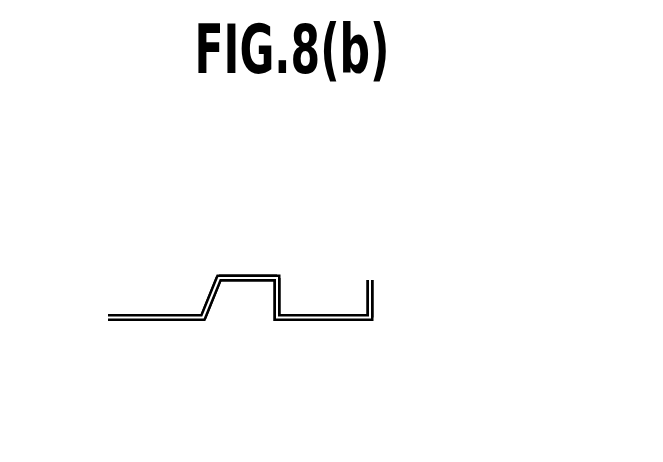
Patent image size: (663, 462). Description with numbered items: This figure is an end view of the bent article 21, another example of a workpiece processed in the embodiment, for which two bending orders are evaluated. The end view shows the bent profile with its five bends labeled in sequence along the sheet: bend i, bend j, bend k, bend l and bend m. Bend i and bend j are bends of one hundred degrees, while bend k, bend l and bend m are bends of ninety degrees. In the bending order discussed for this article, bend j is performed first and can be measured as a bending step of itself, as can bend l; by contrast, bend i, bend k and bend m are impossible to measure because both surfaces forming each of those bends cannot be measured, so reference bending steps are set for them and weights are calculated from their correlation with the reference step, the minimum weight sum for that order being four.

The bent article 21 is at (270, 281).
The bend i is at (207, 322).
The bend j is at (229, 275).
The bend k is at (280, 275).
The bend l is at (275, 322).
The bend m is at (375, 322).